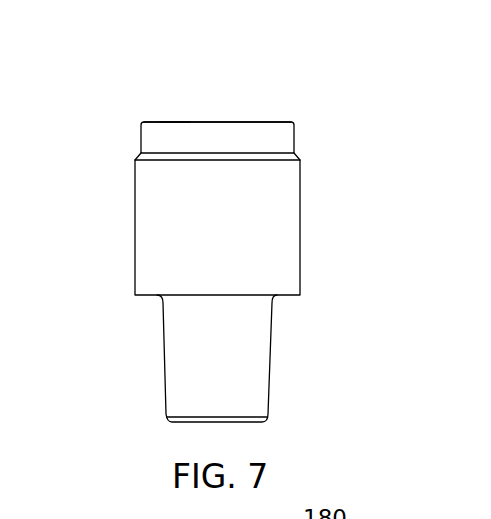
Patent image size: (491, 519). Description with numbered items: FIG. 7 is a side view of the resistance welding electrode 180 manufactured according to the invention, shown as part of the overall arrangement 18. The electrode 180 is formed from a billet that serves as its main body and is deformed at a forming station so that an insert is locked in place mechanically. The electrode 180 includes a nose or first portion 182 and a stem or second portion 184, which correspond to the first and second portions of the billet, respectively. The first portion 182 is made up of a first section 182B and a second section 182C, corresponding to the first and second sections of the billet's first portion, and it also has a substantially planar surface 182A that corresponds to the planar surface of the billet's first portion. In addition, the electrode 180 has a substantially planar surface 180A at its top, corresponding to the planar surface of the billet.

The dispensing device 18 is at (0, 333).
The resistance welding electrode 180 is at (204, 236).
The substantially planar surface 180A is at (173, 121).
The nose or first portion 182 is at (204, 173).
The substantially planar surface 182A is at (157, 121).
The first section 182B is at (272, 135).
The second section 182C is at (283, 222).
The stem or second portion 184 is at (260, 372).